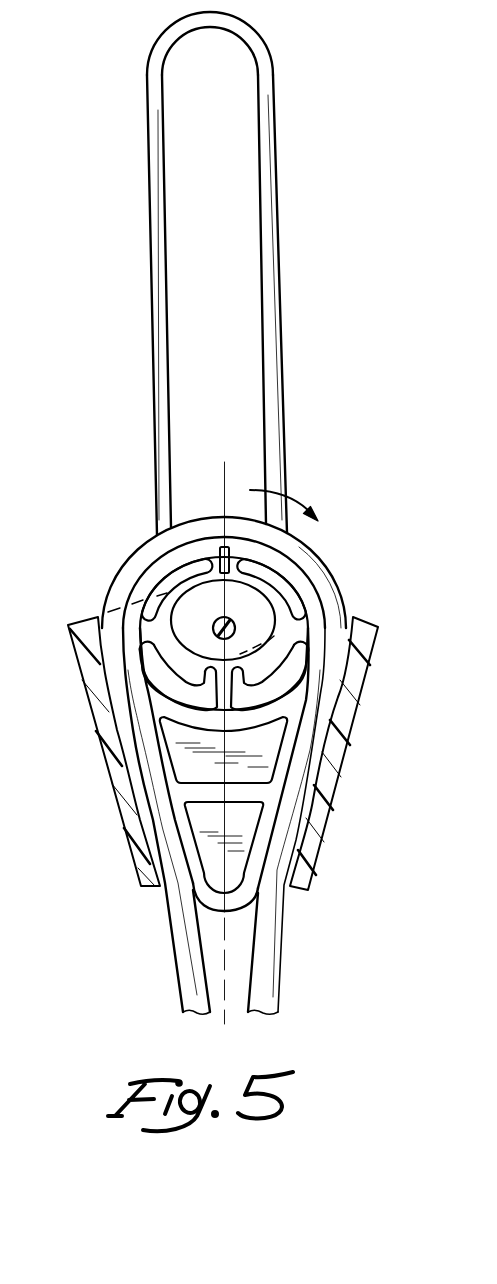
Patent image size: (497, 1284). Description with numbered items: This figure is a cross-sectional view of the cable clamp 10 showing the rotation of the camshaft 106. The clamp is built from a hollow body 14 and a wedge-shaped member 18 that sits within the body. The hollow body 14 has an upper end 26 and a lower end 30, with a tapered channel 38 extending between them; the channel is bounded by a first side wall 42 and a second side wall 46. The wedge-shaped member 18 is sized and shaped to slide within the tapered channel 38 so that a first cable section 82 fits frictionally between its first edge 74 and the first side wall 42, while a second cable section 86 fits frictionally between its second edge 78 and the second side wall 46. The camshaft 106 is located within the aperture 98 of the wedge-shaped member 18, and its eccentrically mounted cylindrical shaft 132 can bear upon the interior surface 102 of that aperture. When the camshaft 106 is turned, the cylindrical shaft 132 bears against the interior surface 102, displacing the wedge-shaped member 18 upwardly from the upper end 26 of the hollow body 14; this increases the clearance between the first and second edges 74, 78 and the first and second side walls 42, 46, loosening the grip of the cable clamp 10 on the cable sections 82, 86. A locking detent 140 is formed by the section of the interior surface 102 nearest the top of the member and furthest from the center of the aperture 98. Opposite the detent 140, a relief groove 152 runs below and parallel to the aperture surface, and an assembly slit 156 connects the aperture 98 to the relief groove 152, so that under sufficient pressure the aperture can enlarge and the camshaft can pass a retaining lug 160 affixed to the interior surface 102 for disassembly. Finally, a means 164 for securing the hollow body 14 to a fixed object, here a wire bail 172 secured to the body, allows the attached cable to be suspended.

The cable clamp 10 is at (368, 703).
The hollow body 14 is at (358, 648).
The wedge-shaped member 18 is at (287, 745).
The upper end 26 is at (80, 622).
The lower end 30 is at (293, 890).
The tapered channel 38 is at (345, 615).
The first side wall 42 is at (137, 811).
The second side wall 46 is at (304, 833).
The first edge 74 is at (170, 838).
The second edge 78 is at (287, 793).
The first cable section 82 is at (185, 961).
The second cable section 86 is at (272, 975).
The aperture 98 is at (287, 670).
The interior surface 102 is at (165, 625).
The camshaft 106 is at (226, 680).
The cylindrical shaft 132 is at (221, 618).
The locking detent 140 is at (245, 570).
The relief groove 152 is at (295, 670).
The assembly slit 156 is at (285, 595).
The retaining lug 160 is at (240, 650).
The means for securing the hollow body to an object 164 is at (277, 235).
The wire bail 172 is at (276, 96).